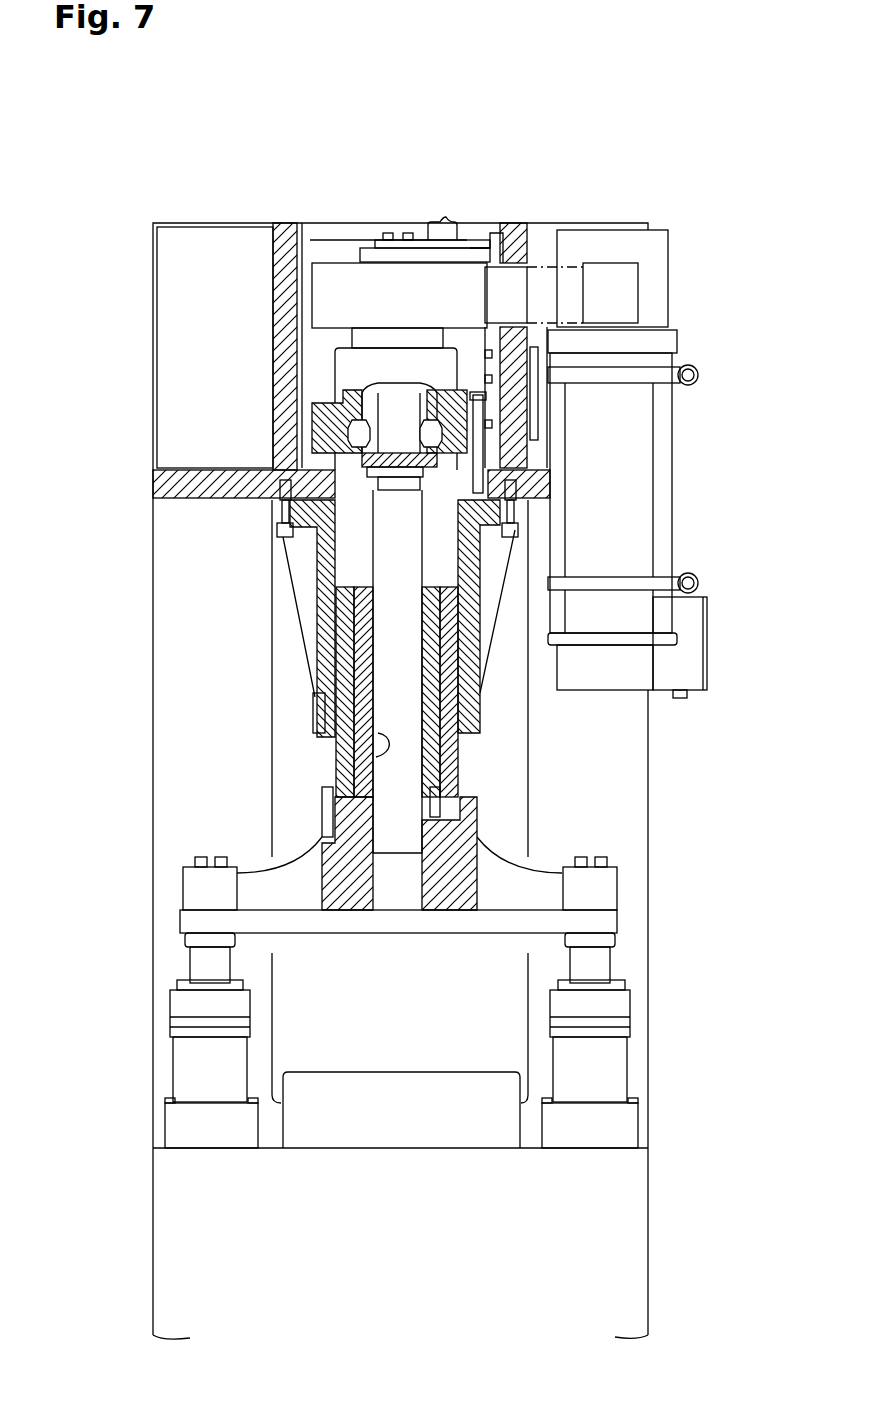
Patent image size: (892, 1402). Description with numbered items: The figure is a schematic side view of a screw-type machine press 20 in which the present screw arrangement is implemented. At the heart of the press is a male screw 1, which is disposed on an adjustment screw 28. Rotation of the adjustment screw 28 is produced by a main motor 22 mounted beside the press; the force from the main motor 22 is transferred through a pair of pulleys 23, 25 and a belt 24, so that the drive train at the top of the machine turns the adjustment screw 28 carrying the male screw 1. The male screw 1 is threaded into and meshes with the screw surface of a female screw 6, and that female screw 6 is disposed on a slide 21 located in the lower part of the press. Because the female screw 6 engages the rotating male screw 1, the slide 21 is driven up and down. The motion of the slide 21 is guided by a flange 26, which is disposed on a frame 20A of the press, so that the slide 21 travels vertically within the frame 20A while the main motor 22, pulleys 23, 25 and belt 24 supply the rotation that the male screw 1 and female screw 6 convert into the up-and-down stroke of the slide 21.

The screw-type machine press 20 is at (202, 159).
The frame 20A is at (167, 479).
The pulley 25 is at (333, 283).
The belt 24 is at (543, 288).
The pulley 23 is at (620, 291).
The main motor 22 is at (637, 503).
The slide 21 is at (545, 890).
The adjustment screw 28 is at (393, 490).
The male screw 1 is at (397, 607).
The flange 26 is at (325, 668).
The female screw 6 is at (373, 757).